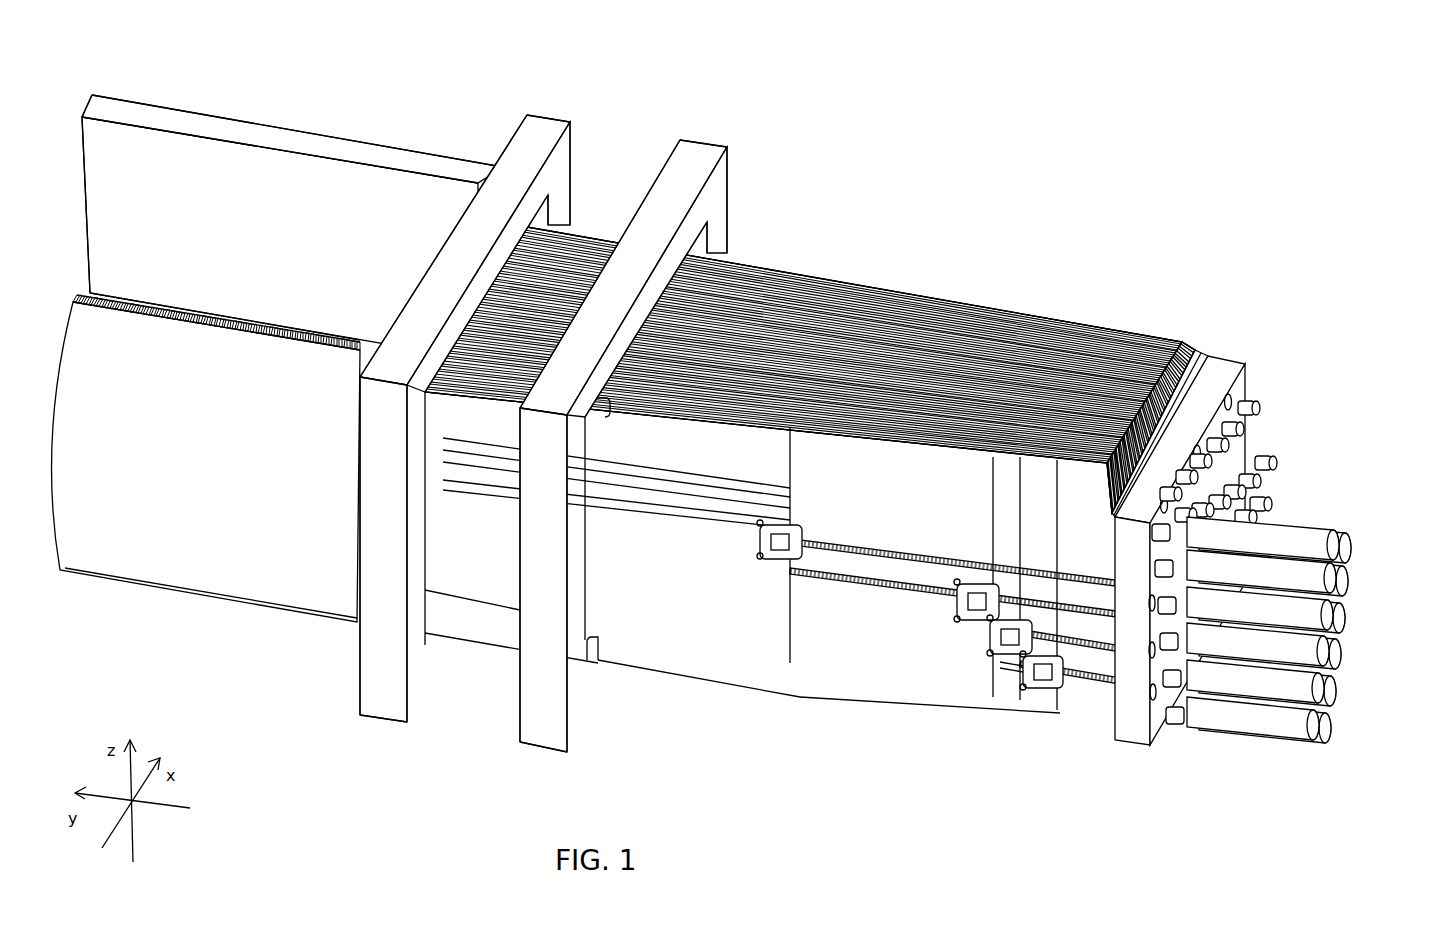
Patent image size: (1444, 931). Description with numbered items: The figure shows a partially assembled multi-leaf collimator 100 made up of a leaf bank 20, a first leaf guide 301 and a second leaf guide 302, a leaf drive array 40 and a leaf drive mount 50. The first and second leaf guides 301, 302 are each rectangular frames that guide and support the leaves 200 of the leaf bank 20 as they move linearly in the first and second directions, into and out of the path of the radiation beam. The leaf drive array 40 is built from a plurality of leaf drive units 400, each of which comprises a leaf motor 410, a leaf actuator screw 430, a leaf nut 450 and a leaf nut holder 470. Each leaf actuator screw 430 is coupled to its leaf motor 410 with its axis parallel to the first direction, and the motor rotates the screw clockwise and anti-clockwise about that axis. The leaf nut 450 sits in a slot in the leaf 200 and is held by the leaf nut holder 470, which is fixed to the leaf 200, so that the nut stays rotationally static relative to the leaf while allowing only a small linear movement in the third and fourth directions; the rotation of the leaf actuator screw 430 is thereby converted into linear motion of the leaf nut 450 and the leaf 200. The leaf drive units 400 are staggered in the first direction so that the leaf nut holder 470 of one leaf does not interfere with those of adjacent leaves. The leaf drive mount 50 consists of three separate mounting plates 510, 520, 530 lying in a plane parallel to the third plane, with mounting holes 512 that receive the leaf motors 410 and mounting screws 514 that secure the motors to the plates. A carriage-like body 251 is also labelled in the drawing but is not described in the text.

The multi-leaf collimator 100 is at (735, 441).
The leaf bank 20 is at (903, 250).
The leaf drive array 40 is at (1355, 512).
The leaf drive mount 50 is at (1229, 492).
The leaf 200 is at (113, 553).
The carriage body 251 is at (693, 537).
The first leaf guide 301 is at (547, 113).
The second leaf guide 302 is at (707, 145).
The leaf drive unit 400 is at (988, 684).
The leaf motor 410 is at (1201, 760).
The leaf actuator screw 430 is at (1110, 687).
The leaf nut 450 is at (1038, 685).
The leaf nut holder 470 is at (1020, 687).
The mounting plate 510 is at (1150, 490).
The mounting plate 520 is at (1180, 432).
The mounting plate 530 is at (1217, 373).
The mounting hole 512 is at (1187, 683).
The mounting screw 514 is at (1257, 400).